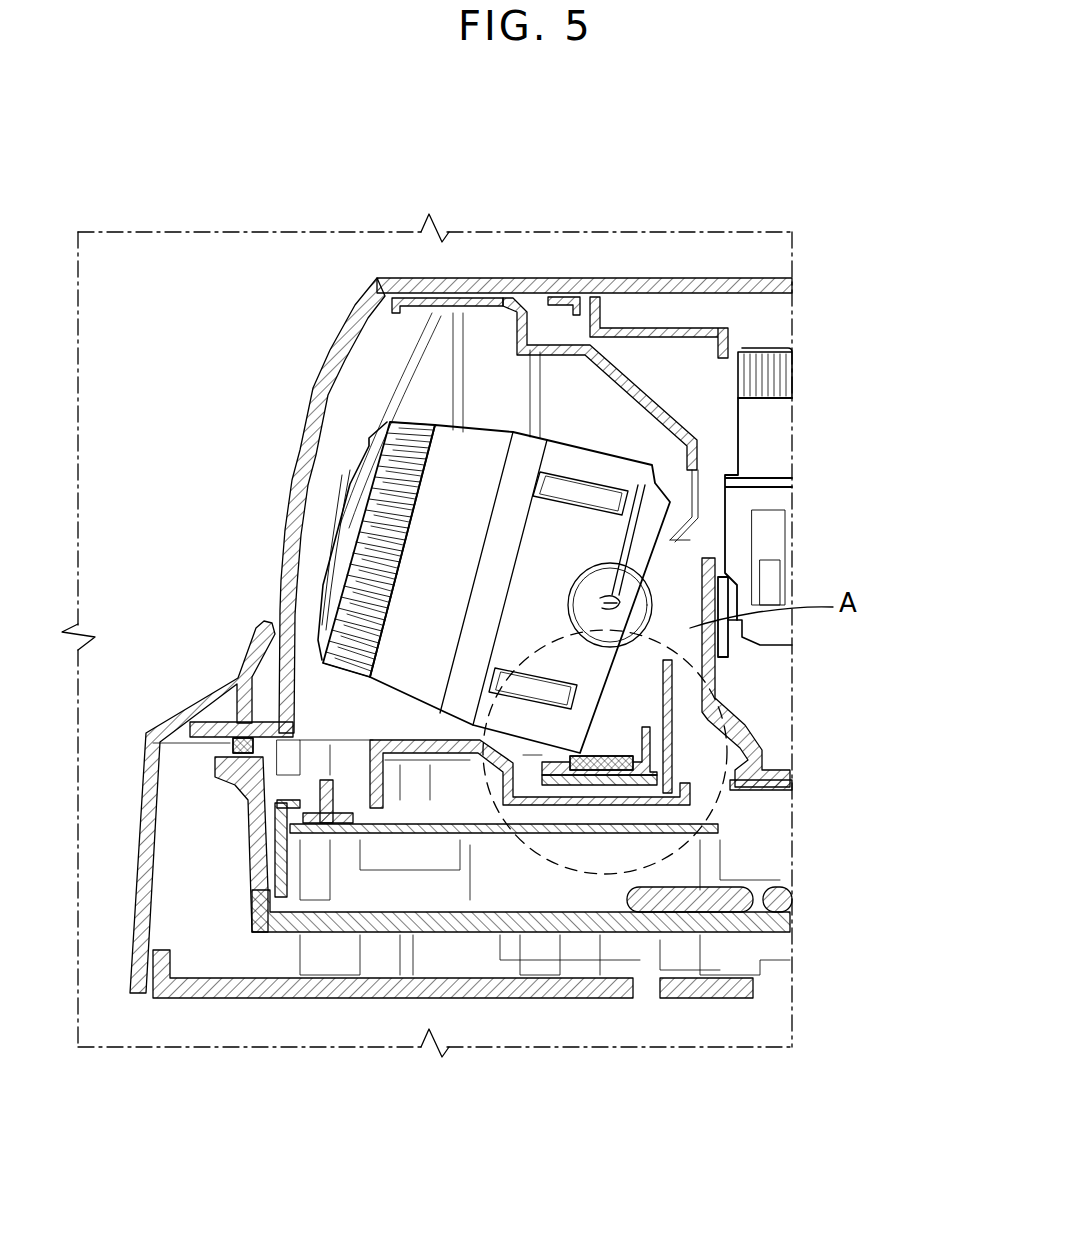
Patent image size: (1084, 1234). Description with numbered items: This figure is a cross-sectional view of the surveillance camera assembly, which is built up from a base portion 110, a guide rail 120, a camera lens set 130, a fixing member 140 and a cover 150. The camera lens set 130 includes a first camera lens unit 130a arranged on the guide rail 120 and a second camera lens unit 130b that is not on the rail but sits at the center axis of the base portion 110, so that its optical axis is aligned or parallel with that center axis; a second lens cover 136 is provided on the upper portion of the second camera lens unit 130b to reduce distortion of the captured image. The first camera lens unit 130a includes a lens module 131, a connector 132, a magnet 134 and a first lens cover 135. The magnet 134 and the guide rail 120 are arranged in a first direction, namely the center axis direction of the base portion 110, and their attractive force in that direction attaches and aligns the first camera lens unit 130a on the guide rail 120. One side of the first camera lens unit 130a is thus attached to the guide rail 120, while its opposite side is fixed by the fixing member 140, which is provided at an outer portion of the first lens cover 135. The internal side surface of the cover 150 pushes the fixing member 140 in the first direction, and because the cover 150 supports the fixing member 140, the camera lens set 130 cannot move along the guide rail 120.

The base portion 110 is at (335, 998).
The guide rail 120 is at (568, 786).
The camera lens set 130 is at (656, 550).
The first camera lens unit 130a is at (628, 544).
The second camera lens unit 130b is at (768, 443).
The lens module 131 is at (483, 447).
The connector 132 is at (638, 782).
The magnet 134 is at (600, 770).
The first lens cover 135 is at (653, 407).
The second lens cover 136 is at (692, 328).
The fixing member 140 is at (497, 292).
The cover 150 is at (345, 345).